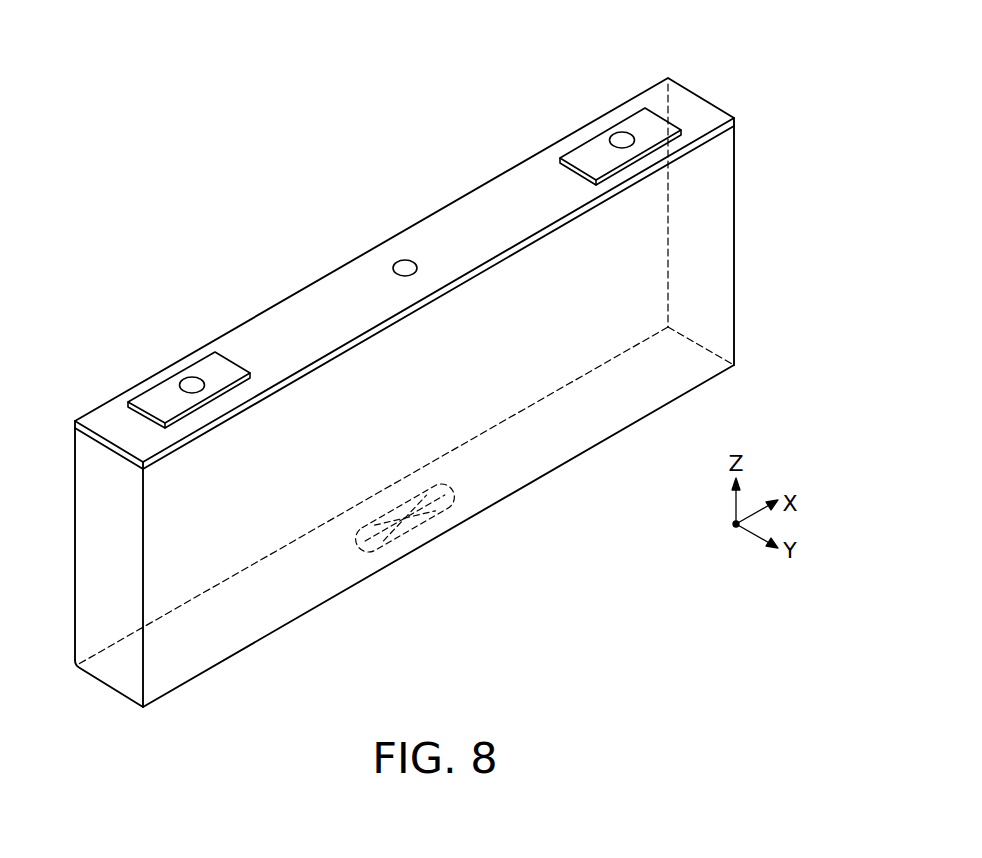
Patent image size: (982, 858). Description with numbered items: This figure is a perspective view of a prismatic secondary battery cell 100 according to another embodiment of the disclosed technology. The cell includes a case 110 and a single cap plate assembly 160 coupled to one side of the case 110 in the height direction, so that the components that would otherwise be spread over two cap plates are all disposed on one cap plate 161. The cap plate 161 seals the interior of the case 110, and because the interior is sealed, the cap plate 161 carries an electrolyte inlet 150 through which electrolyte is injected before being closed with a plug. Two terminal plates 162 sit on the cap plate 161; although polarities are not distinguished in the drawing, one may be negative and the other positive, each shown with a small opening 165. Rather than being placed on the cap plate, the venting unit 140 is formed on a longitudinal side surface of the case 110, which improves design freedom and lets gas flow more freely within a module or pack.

The secondary battery cell 100 is at (190, 58).
The case 110 is at (404, 395).
The venting unit 140 is at (433, 531).
The electrolyte inlet 150 is at (398, 262).
The cap plate assembly 160 is at (404, 251).
The cap plate 161 is at (337, 295).
The terminal plates 162 is at (205, 372).
The terminal hole 165 is at (186, 380).